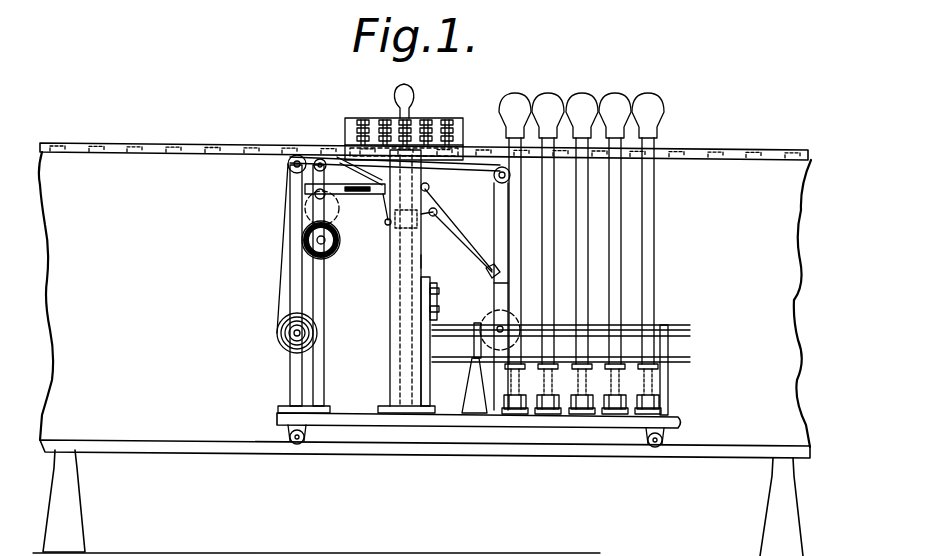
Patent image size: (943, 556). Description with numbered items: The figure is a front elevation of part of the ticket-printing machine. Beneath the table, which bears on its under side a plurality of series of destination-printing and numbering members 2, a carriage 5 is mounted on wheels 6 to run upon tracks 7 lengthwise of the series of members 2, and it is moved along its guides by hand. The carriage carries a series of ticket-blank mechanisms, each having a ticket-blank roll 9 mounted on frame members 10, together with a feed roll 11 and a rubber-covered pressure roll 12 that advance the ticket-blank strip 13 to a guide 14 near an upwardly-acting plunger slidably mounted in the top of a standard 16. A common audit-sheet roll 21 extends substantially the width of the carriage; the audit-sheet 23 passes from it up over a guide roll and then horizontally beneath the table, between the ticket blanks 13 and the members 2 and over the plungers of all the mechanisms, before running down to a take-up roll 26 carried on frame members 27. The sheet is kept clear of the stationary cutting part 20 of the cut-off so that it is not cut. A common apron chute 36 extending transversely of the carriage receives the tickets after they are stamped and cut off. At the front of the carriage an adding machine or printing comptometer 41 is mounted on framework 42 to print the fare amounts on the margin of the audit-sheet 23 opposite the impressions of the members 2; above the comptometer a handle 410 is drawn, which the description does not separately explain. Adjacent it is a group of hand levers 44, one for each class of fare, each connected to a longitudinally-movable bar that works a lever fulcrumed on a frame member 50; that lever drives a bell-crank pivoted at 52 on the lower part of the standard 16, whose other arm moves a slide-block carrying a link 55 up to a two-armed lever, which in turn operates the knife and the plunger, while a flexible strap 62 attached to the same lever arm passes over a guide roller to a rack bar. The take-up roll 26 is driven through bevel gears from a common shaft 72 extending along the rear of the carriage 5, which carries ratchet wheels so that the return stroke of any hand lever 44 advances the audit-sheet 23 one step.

The tracks 7 is at (152, 143).
The destination-printing and numbering members 2 is at (96, 155).
The ticket-blank strip 13 is at (345, 157).
The adding machine or printing comptometer 41 is at (345, 128).
The handle 410 is at (404, 107).
The hand levers 44 is at (642, 95).
The common shaft 72 is at (664, 325).
The rubber-covered pressure roll 12 is at (290, 382).
The frame members 10 is at (320, 384).
The audit-sheet 23 is at (283, 252).
The audit-sheet roll 21 is at (284, 338).
The ticket-blank roll 9 is at (340, 246).
The stationary cutting part 20 is at (317, 193).
The feed roll 11 is at (332, 206).
The guide 14 is at (376, 174).
The standard 16 is at (390, 288).
The framework 42 is at (393, 392).
The flexible strap 62 is at (390, 228).
The common apron chute 36 is at (462, 234).
The link 55 is at (430, 262).
The take-up roll 26 is at (490, 307).
The frame members 27 is at (500, 283).
The pivot 52 is at (437, 315).
The frame member 50 is at (476, 380).
The carriage 5 is at (277, 414).
The wheels 6 is at (304, 437).